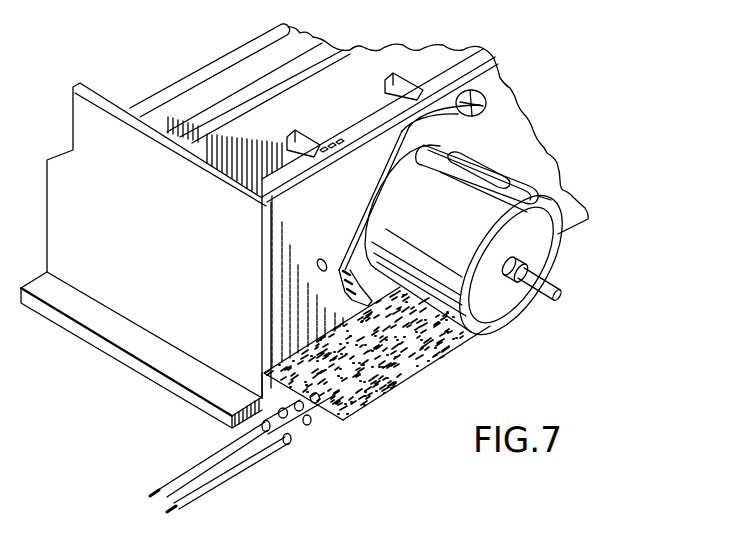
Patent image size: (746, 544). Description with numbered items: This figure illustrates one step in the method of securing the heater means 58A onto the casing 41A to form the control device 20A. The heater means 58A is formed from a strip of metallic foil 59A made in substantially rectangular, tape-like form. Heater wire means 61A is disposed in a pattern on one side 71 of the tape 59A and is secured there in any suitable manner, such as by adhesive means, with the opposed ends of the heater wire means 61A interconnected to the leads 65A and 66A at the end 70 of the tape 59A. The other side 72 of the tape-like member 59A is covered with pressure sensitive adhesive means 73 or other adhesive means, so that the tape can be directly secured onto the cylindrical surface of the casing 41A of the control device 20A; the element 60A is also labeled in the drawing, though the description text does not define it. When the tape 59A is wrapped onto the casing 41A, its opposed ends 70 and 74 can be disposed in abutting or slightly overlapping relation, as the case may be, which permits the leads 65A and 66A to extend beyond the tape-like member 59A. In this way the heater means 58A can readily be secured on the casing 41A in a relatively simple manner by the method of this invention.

The control device 20A is at (607, 100).
The casing 41A is at (398, 217).
The heater means 58A is at (372, 408).
The strip of metallic foil 59A is at (428, 368).
The motor 60A is at (412, 186).
The heater wire means 61A is at (526, 189).
The lead 65A is at (277, 443).
The lead 66A is at (261, 428).
The end of the tape 70 is at (261, 381).
The side of the tape 71 is at (478, 160).
The other side of the tape-like member 72 is at (384, 369).
The pressure sensitive adhesive means 73 is at (431, 339).
The end of the tape-like member 74 is at (480, 192).